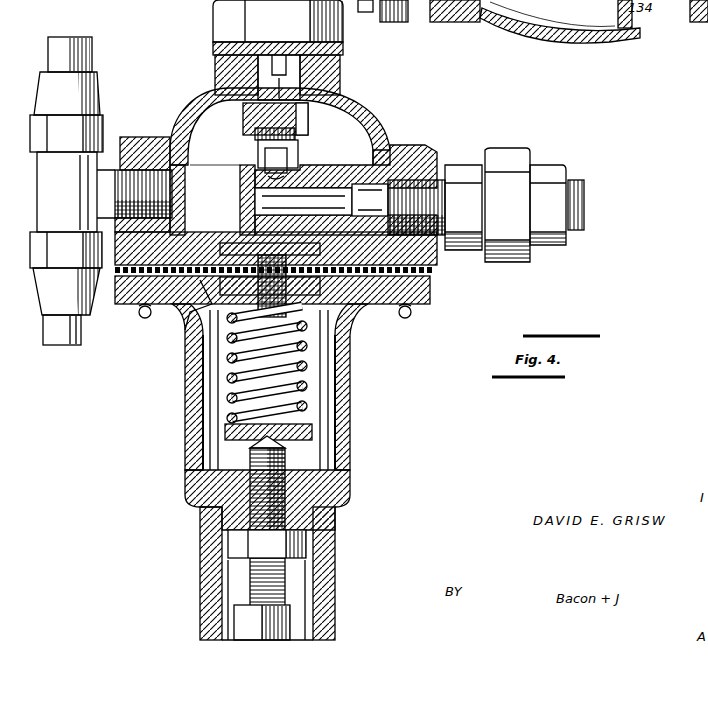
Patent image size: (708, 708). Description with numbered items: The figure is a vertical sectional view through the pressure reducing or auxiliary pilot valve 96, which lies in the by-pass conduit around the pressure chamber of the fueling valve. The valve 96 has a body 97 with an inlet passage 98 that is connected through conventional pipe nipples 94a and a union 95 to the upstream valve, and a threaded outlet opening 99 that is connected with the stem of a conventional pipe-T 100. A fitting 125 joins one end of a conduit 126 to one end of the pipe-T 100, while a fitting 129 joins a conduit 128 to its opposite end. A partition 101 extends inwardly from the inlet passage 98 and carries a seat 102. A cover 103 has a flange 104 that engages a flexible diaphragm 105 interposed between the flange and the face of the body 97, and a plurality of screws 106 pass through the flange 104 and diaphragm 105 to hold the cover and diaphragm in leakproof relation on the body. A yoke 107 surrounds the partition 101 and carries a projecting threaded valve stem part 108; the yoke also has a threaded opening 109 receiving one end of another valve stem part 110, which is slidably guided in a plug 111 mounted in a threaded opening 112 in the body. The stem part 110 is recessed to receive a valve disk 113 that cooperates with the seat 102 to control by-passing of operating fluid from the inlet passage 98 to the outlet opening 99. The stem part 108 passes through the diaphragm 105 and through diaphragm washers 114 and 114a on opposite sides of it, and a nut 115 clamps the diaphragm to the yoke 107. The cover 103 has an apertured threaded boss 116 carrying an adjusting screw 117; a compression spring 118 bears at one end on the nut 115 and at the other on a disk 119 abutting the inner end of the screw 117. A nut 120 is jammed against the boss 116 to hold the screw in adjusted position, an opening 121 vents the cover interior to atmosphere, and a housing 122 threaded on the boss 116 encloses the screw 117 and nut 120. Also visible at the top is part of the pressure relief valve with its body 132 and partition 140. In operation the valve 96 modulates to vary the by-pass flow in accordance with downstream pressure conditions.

The pipe nipple 94a is at (432, 178).
The union 95 is at (513, 158).
The pressure reducing or auxiliary pilot valve 96 is at (173, 100).
The body 97 is at (370, 110).
The inlet passage 98 is at (390, 150).
The threaded outlet opening 99 is at (150, 145).
The pipe-T 100 is at (100, 165).
The partition 101 is at (322, 170).
The seat 102 is at (252, 160).
The cover 103 is at (352, 390).
The flange 104 is at (432, 294).
The flexible diaphragm 105 is at (435, 272).
The screws 106 is at (145, 318).
The yoke 107 is at (243, 120).
The valve stem part 108 is at (290, 307).
The threaded opening 109 is at (308, 128).
The valve stem part 110 is at (280, 60).
The plug 111 is at (343, 33).
The threaded opening 112 is at (340, 74).
The valve disk 113 is at (255, 136).
The diaphragm washer 114 is at (222, 250).
The diaphragm washer 114a is at (190, 322).
The nut 115 is at (262, 297).
The apertured threaded boss 116 is at (335, 518).
The adjusting screw 117 is at (310, 575).
The compression spring 118 is at (350, 363).
The disk 119 is at (348, 431).
The nut 120 is at (306, 550).
The opening 121 is at (185, 430).
The housing 122 is at (200, 600).
The fitting 125 is at (96, 80).
The conduit 126 is at (79, 37).
The conduit 128 is at (58, 340).
The fitting 129 is at (90, 302).
The body 132 is at (570, 44).
The partition 140 is at (552, 14).